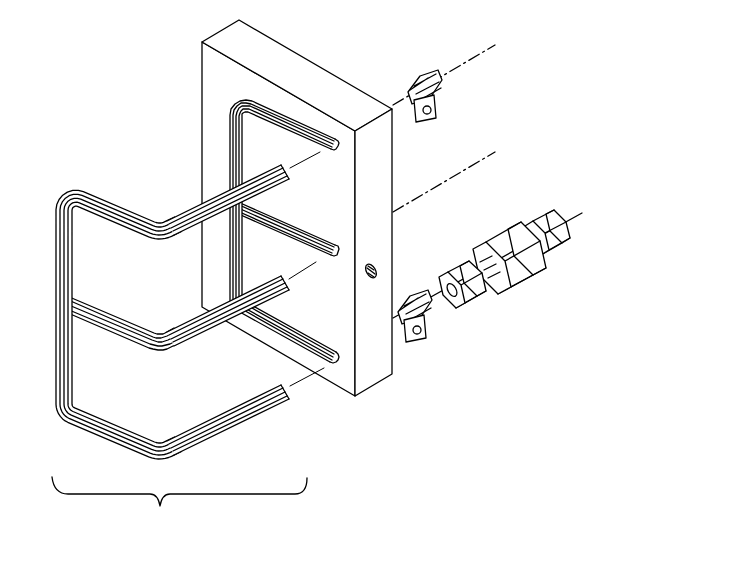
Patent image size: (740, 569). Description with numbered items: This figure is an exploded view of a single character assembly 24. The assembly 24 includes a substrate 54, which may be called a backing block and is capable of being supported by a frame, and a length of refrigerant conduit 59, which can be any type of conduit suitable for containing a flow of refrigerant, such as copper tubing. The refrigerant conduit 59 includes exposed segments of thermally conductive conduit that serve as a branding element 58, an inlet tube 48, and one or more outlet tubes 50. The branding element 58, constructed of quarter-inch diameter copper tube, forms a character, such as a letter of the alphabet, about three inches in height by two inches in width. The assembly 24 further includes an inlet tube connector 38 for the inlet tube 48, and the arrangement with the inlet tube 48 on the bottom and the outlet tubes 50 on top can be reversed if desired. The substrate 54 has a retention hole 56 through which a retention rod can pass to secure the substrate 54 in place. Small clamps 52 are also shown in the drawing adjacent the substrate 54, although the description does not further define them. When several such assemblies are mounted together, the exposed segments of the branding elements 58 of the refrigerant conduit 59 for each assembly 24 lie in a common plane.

The character assembly 24 is at (0, 72).
The inlet tube connector 38 is at (500, 223).
The inlet tube 48 is at (240, 424).
The outlet tubes 50 is at (288, 178).
The clamps 52 is at (418, 74).
The substrate 54 is at (345, 398).
The retention hole 56 is at (378, 272).
The branding element 58 is at (85, 192).
The refrigerant conduit 59 is at (188, 344).